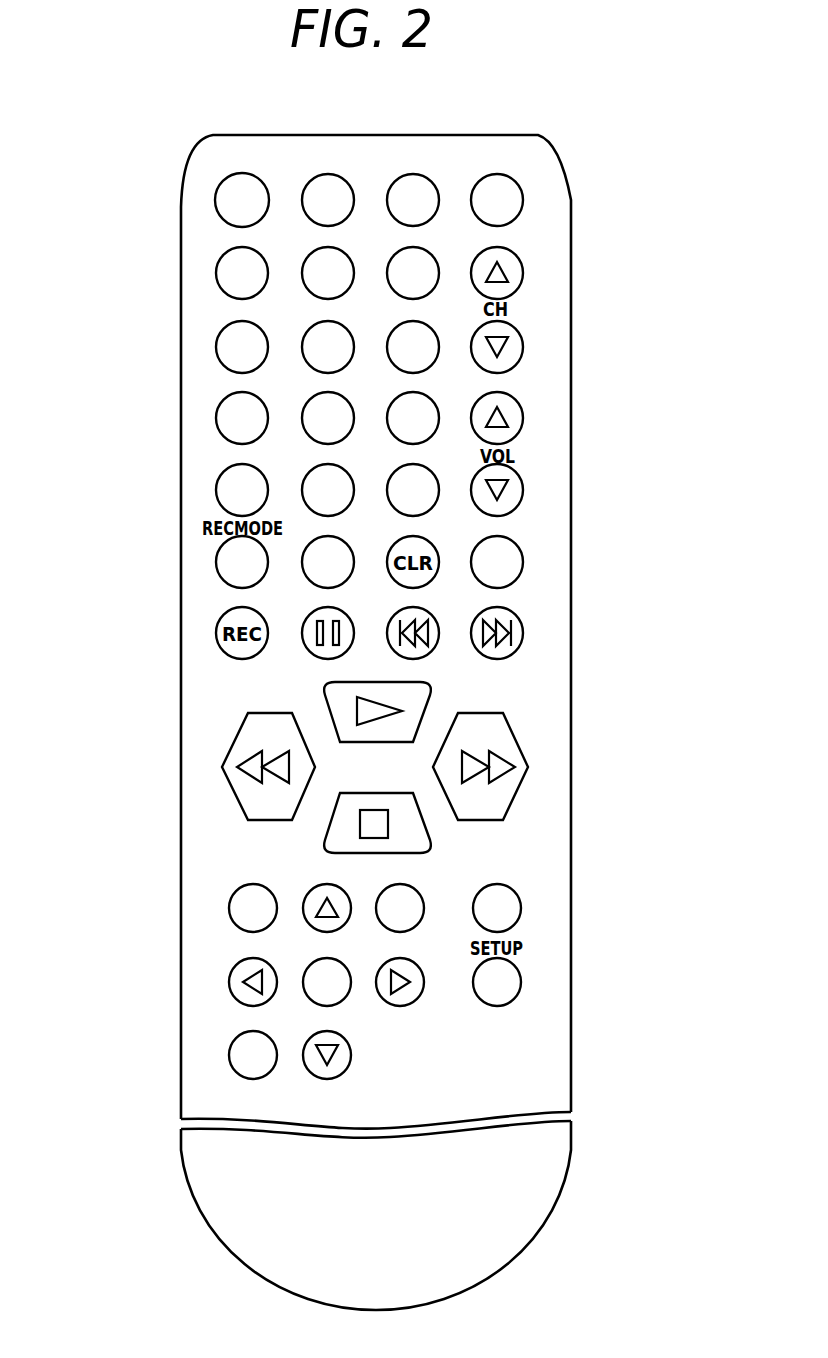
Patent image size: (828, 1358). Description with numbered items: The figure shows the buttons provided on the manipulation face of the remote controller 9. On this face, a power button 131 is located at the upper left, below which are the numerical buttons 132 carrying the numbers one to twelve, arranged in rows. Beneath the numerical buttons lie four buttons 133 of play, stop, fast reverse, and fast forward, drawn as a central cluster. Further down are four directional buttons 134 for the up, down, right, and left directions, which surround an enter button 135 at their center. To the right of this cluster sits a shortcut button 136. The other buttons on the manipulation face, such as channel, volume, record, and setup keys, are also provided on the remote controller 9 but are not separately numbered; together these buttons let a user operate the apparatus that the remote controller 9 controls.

The remote controller 9 is at (571, 1012).
The power button 131 is at (217, 196).
The numerical buttons 132 is at (197, 360).
The four buttons of play, stop, fast reverse, and fast forward 133 is at (205, 725).
The four directional buttons 134 is at (212, 977).
The enter button 135 is at (304, 965).
The shortcut button 136 is at (522, 902).